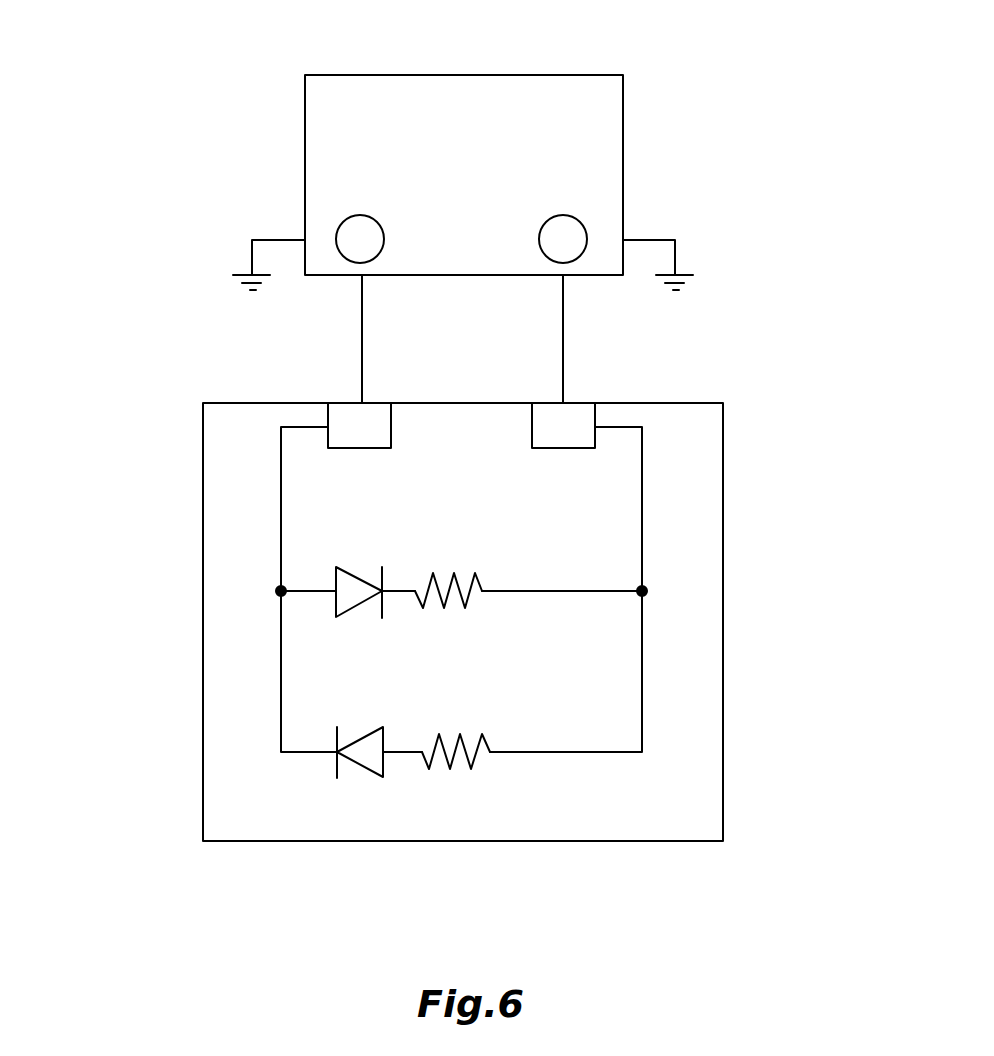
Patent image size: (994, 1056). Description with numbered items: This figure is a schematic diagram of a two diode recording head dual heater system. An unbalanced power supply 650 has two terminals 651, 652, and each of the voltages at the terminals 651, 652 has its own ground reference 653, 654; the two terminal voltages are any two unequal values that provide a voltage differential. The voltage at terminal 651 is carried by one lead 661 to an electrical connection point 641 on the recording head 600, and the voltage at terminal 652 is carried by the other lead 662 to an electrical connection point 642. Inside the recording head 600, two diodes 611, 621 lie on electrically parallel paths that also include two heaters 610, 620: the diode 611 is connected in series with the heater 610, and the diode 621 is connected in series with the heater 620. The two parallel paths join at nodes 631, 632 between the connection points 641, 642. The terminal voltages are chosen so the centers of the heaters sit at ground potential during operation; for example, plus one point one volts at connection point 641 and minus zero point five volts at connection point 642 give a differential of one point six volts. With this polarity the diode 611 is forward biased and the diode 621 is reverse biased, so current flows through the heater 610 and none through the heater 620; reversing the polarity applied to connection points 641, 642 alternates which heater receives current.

The recording head 600 is at (705, 442).
The heater 610 is at (427, 580).
The diode 611 is at (345, 575).
The heater 620 is at (440, 770).
The diode 621 is at (345, 735).
The first node 631 is at (281, 591).
The second node 632 is at (642, 591).
The electrical connection point 641 is at (338, 413).
The electrical connection point 642 is at (585, 408).
The unbalanced power supply 650 is at (572, 84).
The terminal 651 is at (345, 225).
The terminal 652 is at (572, 222).
The ground reference 653 is at (252, 258).
The ground reference 654 is at (676, 255).
The first lead 661 is at (362, 354).
The second lead 662 is at (565, 347).